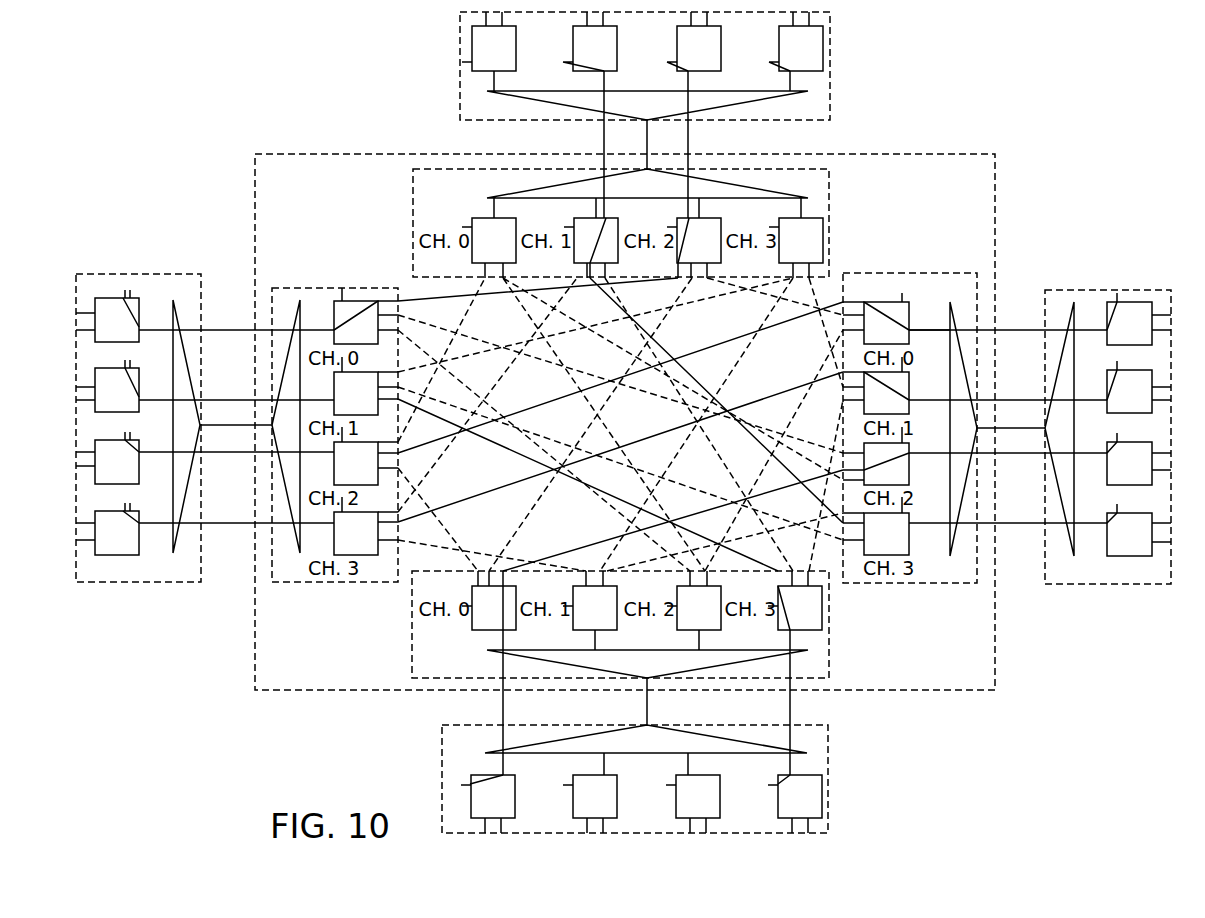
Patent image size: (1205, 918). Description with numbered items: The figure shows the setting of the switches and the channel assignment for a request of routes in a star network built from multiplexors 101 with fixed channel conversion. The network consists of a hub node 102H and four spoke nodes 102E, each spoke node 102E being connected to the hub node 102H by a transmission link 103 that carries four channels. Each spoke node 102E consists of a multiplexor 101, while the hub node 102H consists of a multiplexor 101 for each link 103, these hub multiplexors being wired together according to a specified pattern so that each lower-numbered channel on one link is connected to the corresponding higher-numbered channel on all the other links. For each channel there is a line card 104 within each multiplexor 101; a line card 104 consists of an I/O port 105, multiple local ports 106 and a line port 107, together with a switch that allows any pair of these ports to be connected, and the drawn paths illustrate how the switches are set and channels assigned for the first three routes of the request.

The multiplexor 101 is at (290, 282).
The spoke node 102E is at (625, 422).
The hub node 102H is at (625, 422).
The transmission link 103 is at (622, 422).
The line card 104 is at (907, 300).
The I/O port 105 is at (882, 288).
The local port 106 is at (858, 300).
The line port 107 is at (929, 318).